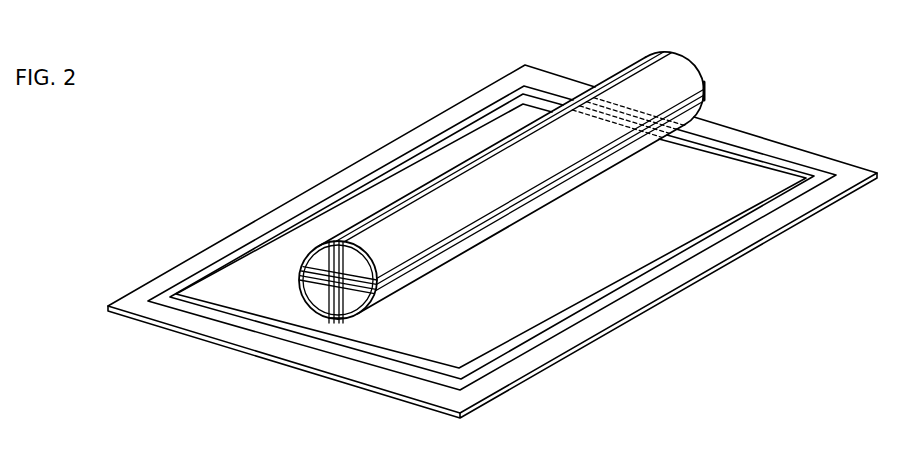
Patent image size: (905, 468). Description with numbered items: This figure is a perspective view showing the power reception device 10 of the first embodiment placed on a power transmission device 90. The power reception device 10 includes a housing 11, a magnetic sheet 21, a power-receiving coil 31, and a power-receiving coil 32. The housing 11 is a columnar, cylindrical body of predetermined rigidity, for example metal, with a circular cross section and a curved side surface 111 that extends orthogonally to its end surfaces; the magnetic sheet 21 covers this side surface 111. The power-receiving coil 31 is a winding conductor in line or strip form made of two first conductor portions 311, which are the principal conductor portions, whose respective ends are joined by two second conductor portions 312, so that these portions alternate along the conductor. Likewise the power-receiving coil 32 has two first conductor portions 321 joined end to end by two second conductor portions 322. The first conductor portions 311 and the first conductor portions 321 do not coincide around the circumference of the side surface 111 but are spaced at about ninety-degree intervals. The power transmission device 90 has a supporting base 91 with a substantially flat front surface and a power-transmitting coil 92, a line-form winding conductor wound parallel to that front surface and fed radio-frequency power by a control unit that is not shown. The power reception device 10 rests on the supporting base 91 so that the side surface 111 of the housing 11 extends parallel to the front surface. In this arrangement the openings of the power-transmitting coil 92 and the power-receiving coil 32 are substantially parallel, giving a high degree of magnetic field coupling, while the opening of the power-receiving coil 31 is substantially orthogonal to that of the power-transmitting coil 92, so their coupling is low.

The power reception device 10 is at (466, 221).
The housing 11 is at (321, 258).
The magnetic sheet 21 is at (334, 246).
The power-receiving coil 31 is at (472, 221).
The first conductor portion 311 is at (618, 71).
The second conductor portion 312 is at (327, 313).
The power-receiving coil 32 is at (466, 180).
The first conductor portion 321 is at (703, 110).
The second conductor portion 322 is at (305, 273).
The side surface 111 is at (352, 318).
The power transmission device 90 is at (492, 264).
The supporting base 91 is at (533, 362).
The power-transmitting coil 92 is at (493, 365).